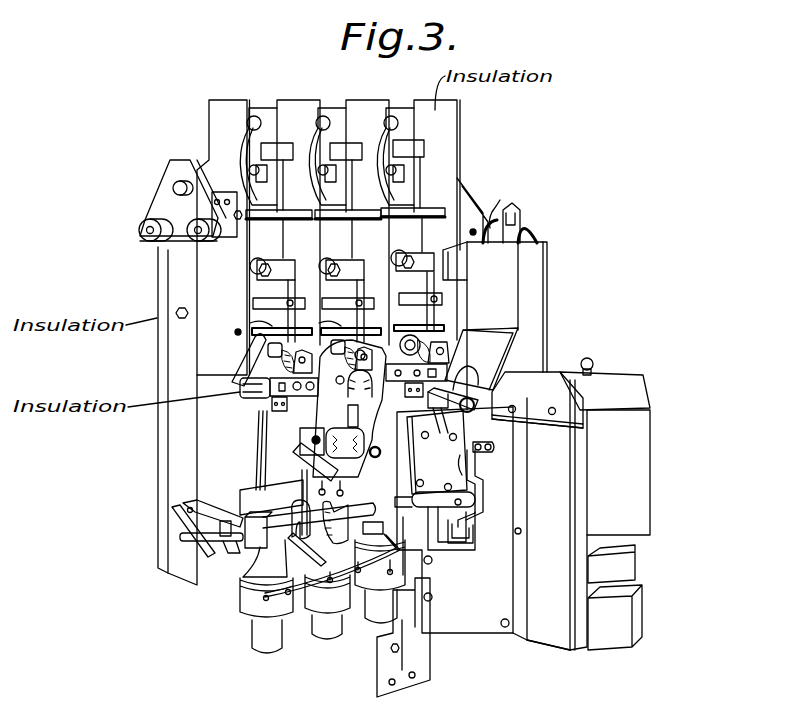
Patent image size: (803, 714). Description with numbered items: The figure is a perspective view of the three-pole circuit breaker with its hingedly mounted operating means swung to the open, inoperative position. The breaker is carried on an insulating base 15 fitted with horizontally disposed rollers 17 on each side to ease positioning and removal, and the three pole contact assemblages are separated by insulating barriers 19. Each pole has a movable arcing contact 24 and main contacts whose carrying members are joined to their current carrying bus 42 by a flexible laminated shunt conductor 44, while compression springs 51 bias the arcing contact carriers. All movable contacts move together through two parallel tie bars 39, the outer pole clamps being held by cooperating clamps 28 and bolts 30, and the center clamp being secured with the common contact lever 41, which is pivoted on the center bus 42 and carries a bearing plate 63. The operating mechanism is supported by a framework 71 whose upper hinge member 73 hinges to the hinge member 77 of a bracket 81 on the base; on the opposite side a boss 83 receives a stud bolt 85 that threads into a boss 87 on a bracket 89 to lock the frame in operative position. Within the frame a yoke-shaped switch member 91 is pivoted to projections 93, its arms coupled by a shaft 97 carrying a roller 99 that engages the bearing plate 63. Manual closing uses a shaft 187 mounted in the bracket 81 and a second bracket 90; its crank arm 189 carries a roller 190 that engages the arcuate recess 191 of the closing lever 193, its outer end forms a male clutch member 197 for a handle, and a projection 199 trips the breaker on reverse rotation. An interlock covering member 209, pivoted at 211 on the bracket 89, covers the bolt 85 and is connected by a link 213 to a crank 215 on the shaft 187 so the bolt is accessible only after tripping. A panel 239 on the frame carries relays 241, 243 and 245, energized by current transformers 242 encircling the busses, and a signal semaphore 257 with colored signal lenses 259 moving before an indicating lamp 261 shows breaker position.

The insulating base 15 is at (160, 268).
The rollers 17 is at (193, 213).
The insulating barriers 19 is at (300, 100).
The movable arcing contact 24 is at (360, 646).
The clamps 28 is at (250, 360).
The bolts 30 is at (364, 356).
The tie bars 39 is at (240, 389).
The common contact lever 41 is at (350, 418).
The current carrying bus 42 is at (252, 640).
The flexible laminated shunt conductor 44 is at (257, 438).
The compression springs 51 is at (355, 443).
The bearing plate 63 is at (361, 383).
The framework 71 is at (543, 275).
The upper hinge member 73 is at (413, 395).
The hinge member 77 is at (433, 452).
The bracket 81 is at (382, 472).
The boss 83 is at (494, 452).
The stud bolt 85 is at (480, 458).
The boss 87 is at (292, 405).
The bracket 89 is at (349, 408).
The second bracket 90 is at (207, 508).
The yoke-shaped switch member 91 is at (470, 400).
The projections 93 is at (460, 506).
The shaft 97 is at (485, 400).
The roller 99 is at (468, 382).
The shaft 187 is at (237, 563).
The crank arm 189 is at (323, 573).
The roller 190 is at (327, 545).
The arcuate recess 191 is at (463, 568).
The manually operable closing lever 193 is at (473, 535).
The male clutch member 197 is at (173, 519).
The projection 199 is at (346, 506).
The covering member 209 is at (352, 473).
The pivot 211 is at (310, 435).
The link 213 is at (305, 487).
The crank 215 is at (287, 548).
The panel 239 is at (580, 652).
The relay 241 is at (640, 447).
The current transformers 242 is at (240, 609).
The relay 243 is at (630, 558).
The relay 245 is at (638, 605).
The signal semaphore 257 is at (533, 233).
The colored signal lenses 259 is at (528, 227).
The indicating lamp 261 is at (515, 212).